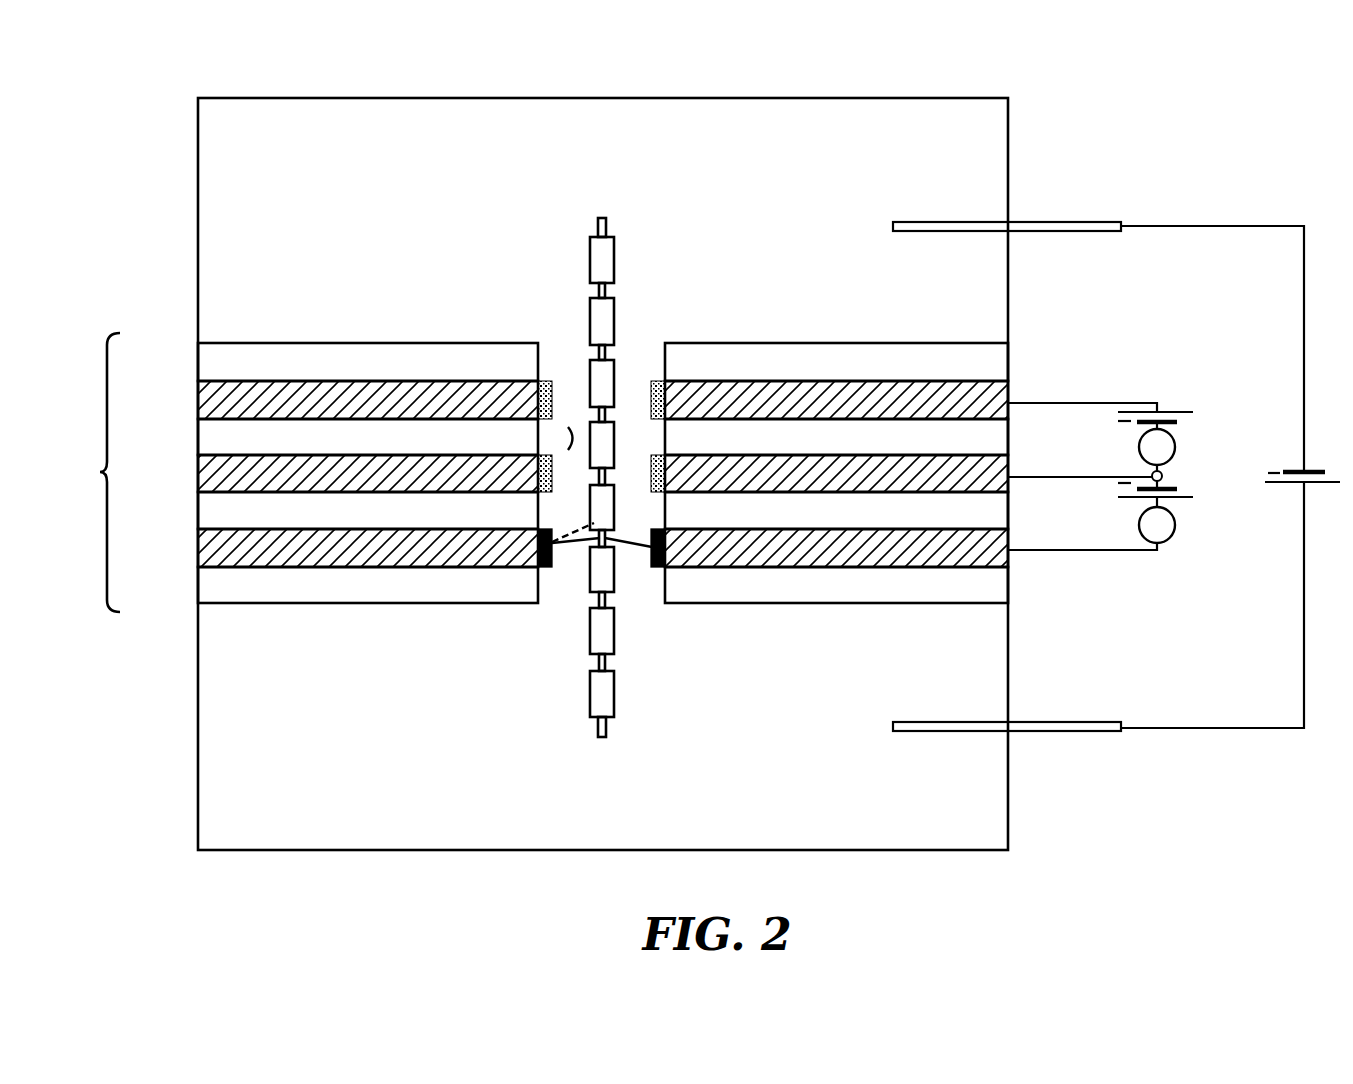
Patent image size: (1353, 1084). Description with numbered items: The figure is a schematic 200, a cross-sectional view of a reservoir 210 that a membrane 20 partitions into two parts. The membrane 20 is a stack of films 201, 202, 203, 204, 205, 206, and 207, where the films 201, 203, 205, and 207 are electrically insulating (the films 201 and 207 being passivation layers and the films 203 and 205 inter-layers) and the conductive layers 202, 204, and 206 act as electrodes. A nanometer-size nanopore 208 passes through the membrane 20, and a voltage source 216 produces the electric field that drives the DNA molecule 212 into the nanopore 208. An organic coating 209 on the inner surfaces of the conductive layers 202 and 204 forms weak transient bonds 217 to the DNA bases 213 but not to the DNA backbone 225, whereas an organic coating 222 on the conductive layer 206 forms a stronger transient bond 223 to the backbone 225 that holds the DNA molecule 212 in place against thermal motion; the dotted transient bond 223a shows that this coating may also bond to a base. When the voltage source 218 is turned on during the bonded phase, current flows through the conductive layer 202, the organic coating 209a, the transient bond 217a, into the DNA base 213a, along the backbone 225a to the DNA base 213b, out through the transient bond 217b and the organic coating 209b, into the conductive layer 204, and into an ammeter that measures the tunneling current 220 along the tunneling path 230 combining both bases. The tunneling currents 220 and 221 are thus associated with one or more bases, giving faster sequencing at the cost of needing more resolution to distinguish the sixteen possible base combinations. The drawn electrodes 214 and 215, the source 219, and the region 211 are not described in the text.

The schematic 200 is at (147, 100).
The membrane 20 is at (87, 472).
The film 201 is at (206, 362).
The conductive layer 202 is at (206, 400).
The film 203 is at (206, 437).
The conductive layer 204 is at (206, 475).
The film 205 is at (206, 513).
The conductive layer 206 is at (206, 550).
The film 207 is at (206, 588).
The nanopore 208 is at (651, 349).
The organic coating 209 is at (546, 360).
The organic coating 209a is at (603, 388).
The organic coating 209b is at (608, 457).
The reservoir 210 is at (1010, 800).
The electrolyte solution 211 is at (793, 801).
The DNA molecule 212 is at (613, 221).
The DNA bases 213 is at (619, 620).
The DNA base 213a is at (600, 385).
The DNA base 213b is at (608, 457).
The upper driving electrode 214 is at (1025, 220).
The lower driving electrode 215 is at (1025, 722).
The voltage source 216 is at (1298, 492).
The transient bonds 217 is at (560, 372).
The transient bond 217a is at (580, 393).
The transient bond 217b is at (564, 459).
The voltage source 218 is at (1180, 412).
The second bias voltage source 219 is at (1180, 496).
The tunneling current 220 is at (1176, 447).
The tunneling current 221 is at (1176, 525).
The organic coating 222 is at (547, 572).
The transient bond 223 is at (575, 568).
The transient bond 223a is at (565, 528).
The DNA backbone 225 is at (668, 551).
The DNA molecule backbone 225a is at (605, 413).
The tunneling path 230 is at (577, 439).